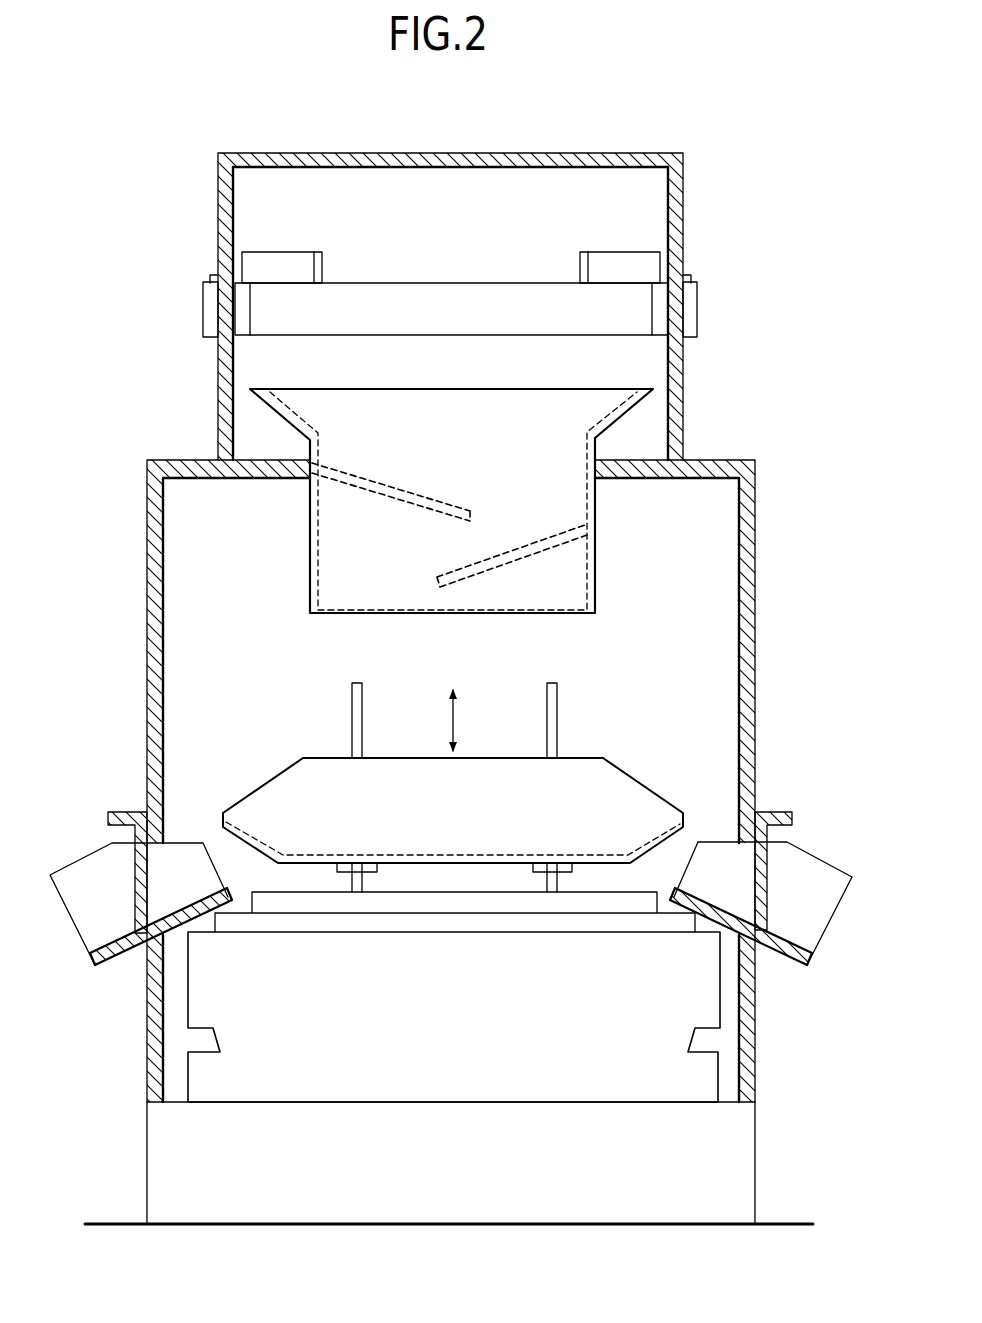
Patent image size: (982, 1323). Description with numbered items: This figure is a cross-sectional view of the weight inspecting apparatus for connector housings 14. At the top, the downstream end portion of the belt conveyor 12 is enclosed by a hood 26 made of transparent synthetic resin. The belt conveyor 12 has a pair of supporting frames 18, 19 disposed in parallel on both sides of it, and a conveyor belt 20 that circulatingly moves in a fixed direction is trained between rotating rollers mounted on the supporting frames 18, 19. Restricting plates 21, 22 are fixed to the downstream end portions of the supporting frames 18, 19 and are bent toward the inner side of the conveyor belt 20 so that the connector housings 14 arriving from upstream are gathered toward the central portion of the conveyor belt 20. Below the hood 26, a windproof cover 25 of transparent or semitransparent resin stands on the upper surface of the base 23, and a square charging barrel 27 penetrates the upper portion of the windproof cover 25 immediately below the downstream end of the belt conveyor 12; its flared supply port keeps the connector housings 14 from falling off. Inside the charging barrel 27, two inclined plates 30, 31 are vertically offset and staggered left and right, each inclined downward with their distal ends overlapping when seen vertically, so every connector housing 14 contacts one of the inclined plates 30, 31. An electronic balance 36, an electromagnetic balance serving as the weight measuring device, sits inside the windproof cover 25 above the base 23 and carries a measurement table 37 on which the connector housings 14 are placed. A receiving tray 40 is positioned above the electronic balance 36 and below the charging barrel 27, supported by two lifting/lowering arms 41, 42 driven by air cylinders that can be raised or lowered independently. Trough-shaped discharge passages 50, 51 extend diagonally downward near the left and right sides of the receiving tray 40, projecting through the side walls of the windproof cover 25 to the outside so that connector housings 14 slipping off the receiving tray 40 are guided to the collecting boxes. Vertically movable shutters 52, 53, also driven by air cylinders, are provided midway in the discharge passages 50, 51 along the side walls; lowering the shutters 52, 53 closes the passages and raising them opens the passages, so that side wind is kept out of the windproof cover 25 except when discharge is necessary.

The belt conveyor 12 is at (451, 264).
The connector housings 14 is at (449, 508).
The supporting frame 18 is at (203, 310).
The supporting frame 19 is at (697, 308).
The conveyor belt 20 is at (457, 283).
The restricting plate 21 is at (279, 252).
The restricting plate 22 is at (613, 252).
The base 23 is at (740, 1165).
The windproof cover 25 is at (755, 620).
The hood 26 is at (683, 197).
The charging barrel 27 is at (595, 568).
The inclined plate 30 is at (395, 498).
The inclined plate 31 is at (522, 557).
The electronic balance 36 is at (710, 1003).
The measurement table 37 is at (437, 882).
The receiving tray 40 is at (637, 780).
The lifting/lowering arm 41 is at (345, 882).
The lifting/lowering arm 42 is at (560, 882).
The discharge passage 50 is at (77, 860).
The discharge passage 51 is at (820, 855).
The shutter 52 is at (118, 812).
The shutter 53 is at (776, 810).